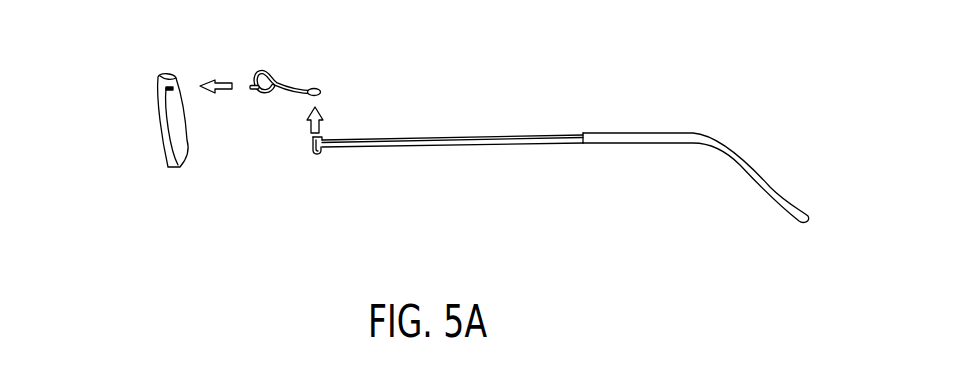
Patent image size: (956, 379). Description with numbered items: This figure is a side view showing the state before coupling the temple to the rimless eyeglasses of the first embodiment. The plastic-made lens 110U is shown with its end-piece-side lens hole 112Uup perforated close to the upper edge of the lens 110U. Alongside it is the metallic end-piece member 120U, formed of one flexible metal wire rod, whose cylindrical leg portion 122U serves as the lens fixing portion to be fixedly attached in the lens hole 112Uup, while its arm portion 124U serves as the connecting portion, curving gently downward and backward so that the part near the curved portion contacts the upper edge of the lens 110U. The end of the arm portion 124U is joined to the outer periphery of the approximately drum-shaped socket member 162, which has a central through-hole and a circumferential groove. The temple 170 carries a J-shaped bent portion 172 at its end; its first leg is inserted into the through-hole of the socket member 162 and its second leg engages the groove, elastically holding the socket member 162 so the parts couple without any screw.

The lens 110U is at (175, 147).
The end-piece-side lens hole 112Uup is at (166, 89).
The metallic end-piece member 120U is at (284, 100).
The leg portion 122U is at (260, 90).
The arm portion 124U is at (295, 90).
The socket member 162 is at (313, 88).
The temple 170 is at (508, 139).
The J-shaped bent portion 172 is at (316, 156).